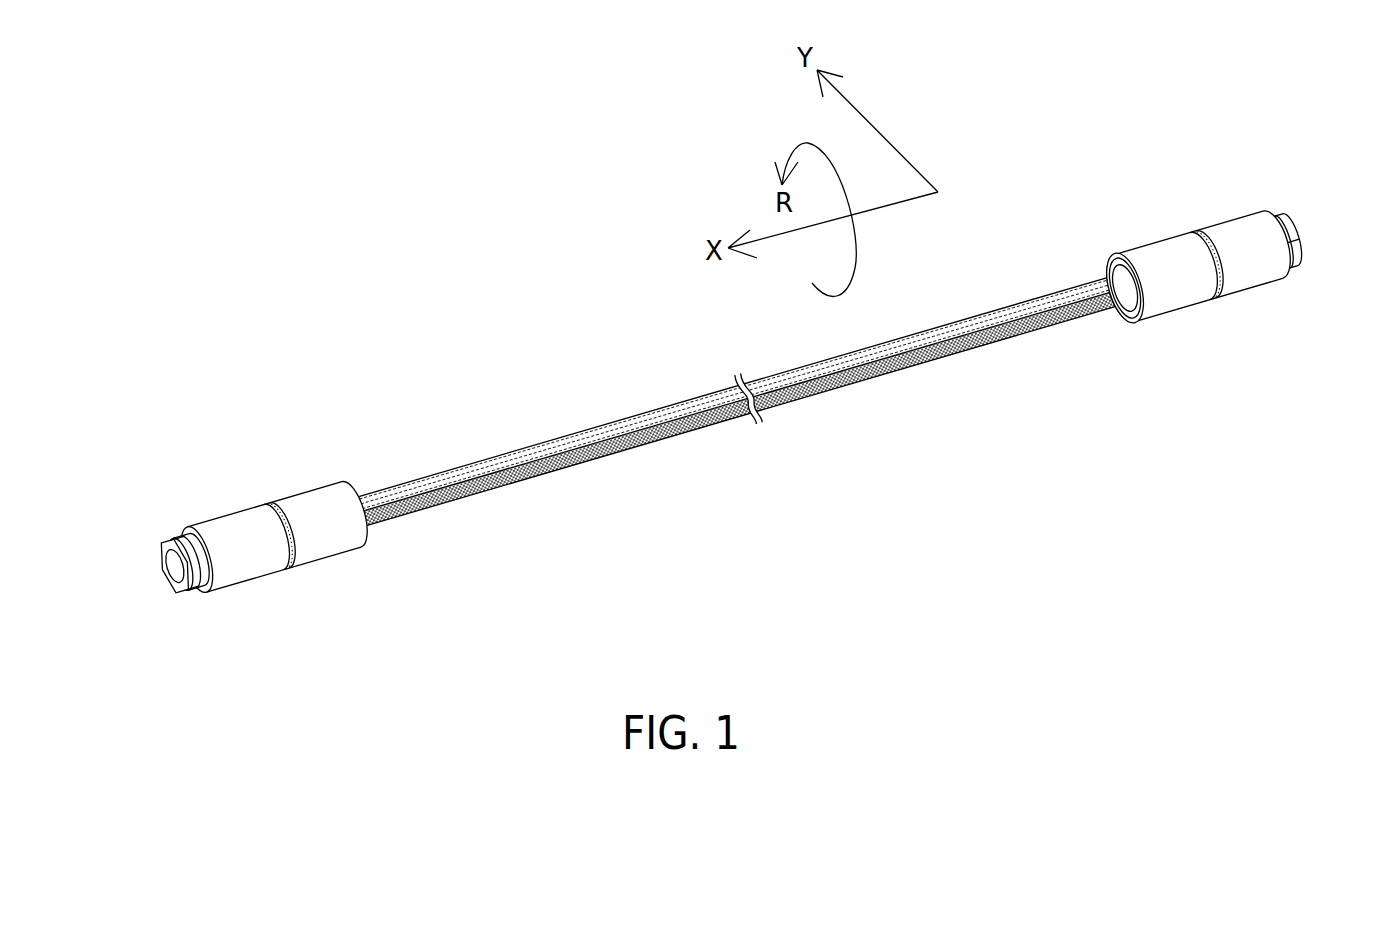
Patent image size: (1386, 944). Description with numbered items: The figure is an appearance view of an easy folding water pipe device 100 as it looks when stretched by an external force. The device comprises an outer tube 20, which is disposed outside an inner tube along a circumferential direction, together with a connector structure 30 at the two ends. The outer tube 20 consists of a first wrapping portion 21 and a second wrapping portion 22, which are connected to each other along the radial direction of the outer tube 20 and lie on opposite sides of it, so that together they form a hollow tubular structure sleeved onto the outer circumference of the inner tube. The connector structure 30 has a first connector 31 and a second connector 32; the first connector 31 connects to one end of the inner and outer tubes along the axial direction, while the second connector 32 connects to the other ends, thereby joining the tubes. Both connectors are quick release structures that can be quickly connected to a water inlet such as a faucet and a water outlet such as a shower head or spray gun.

The easy folding water pipe device 100 is at (163, 122).
The outer tube 20 is at (1101, 553).
The first wrapping portion 21 is at (567, 440).
The second wrapping portion 22 is at (510, 487).
The connector structure 30 is at (1291, 553).
The first connector 31 is at (1243, 253).
The second connector 32 is at (316, 512).